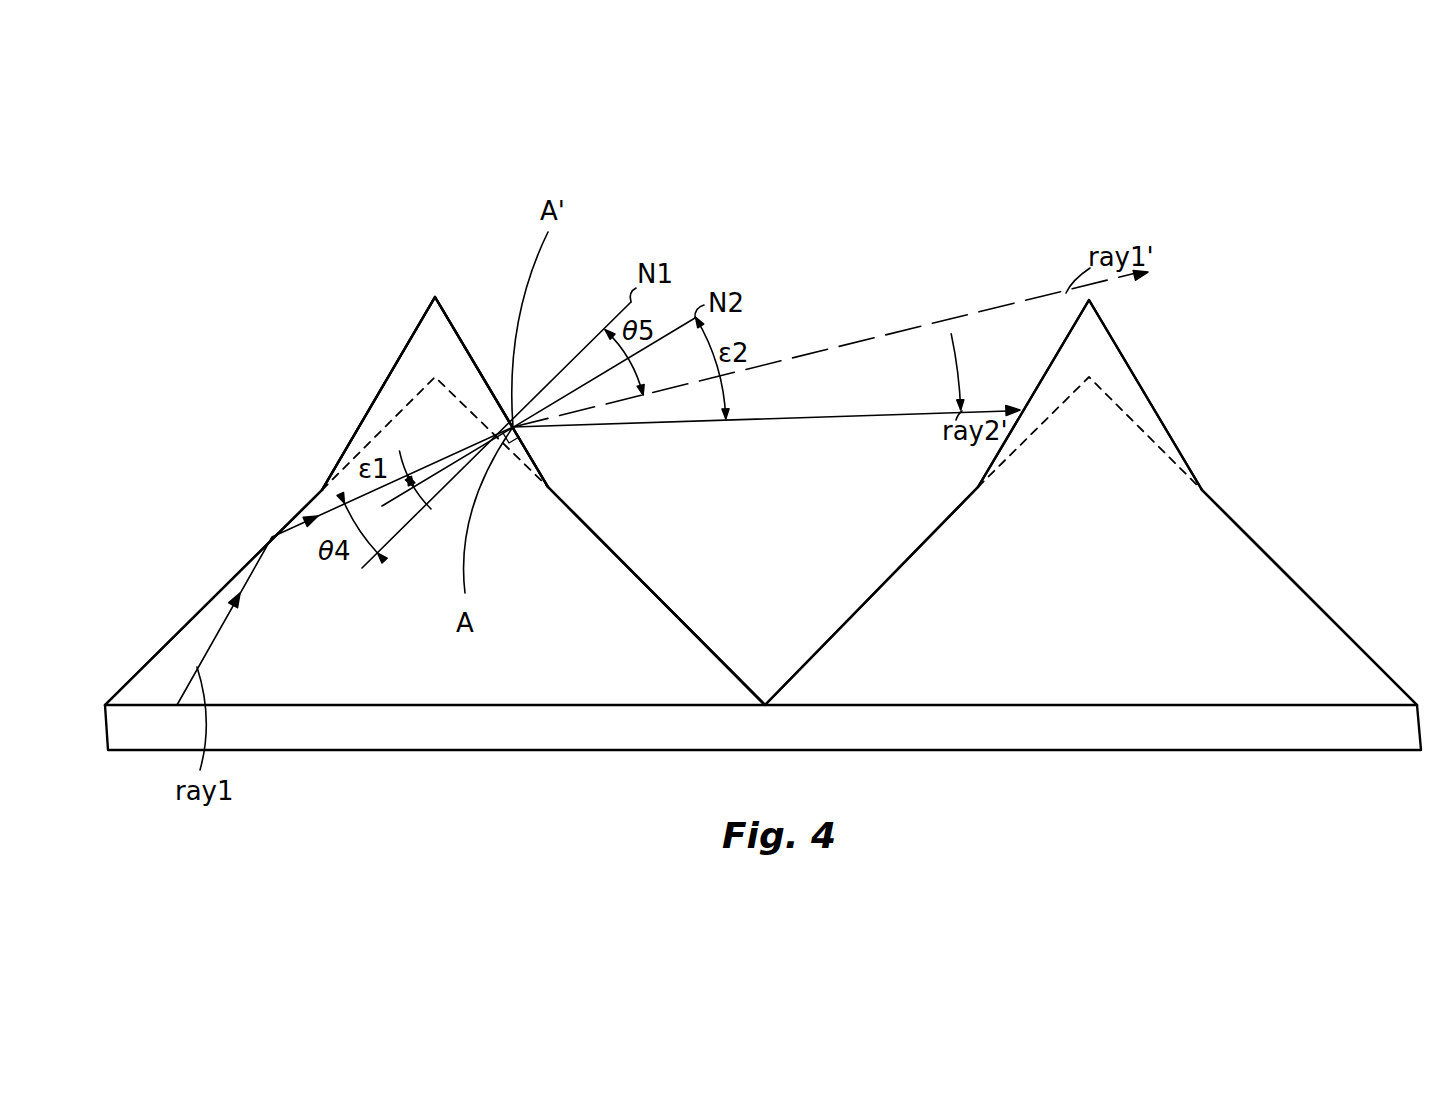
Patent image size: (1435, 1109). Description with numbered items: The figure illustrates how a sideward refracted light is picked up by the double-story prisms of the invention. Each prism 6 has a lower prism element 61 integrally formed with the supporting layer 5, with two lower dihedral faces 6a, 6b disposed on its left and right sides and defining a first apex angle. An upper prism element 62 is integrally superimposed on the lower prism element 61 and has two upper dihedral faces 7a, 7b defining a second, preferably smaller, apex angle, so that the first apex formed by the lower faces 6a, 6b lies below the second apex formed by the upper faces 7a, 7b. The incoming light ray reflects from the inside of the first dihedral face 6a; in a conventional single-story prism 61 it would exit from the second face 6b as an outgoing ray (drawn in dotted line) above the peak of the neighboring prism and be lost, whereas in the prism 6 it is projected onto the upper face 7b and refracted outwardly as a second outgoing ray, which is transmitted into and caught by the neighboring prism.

The supporting layer 5 is at (1122, 730).
The prism 6 is at (690, 536).
The first dihedral face 6a is at (224, 585).
The second dihedral face 6b is at (661, 600).
The lower prism element 61 is at (573, 538).
The upper prism element 62 is at (402, 377).
The upper dihedral face 7a is at (364, 414).
The upper dihedral face 7b is at (462, 342).